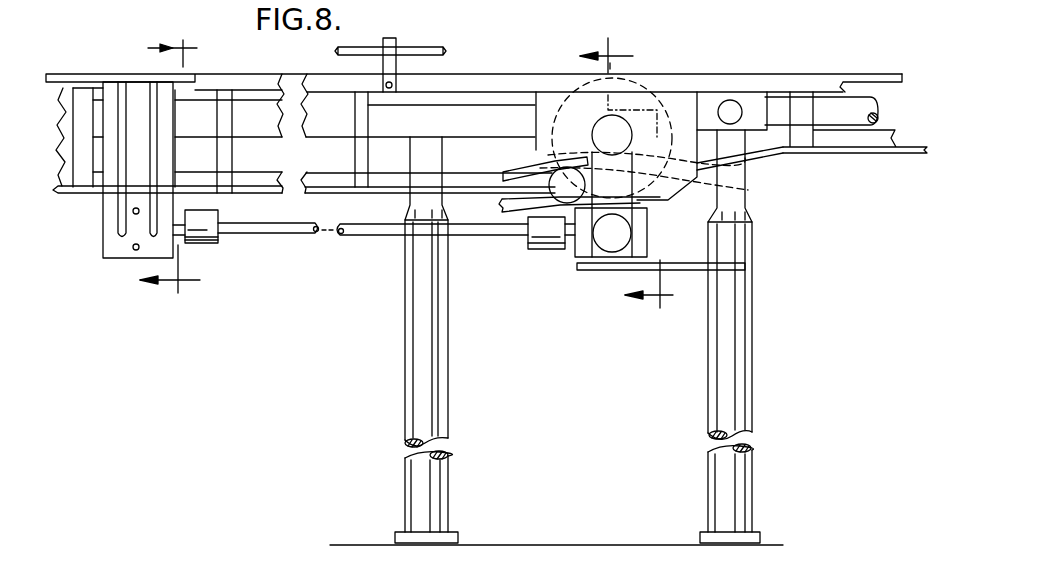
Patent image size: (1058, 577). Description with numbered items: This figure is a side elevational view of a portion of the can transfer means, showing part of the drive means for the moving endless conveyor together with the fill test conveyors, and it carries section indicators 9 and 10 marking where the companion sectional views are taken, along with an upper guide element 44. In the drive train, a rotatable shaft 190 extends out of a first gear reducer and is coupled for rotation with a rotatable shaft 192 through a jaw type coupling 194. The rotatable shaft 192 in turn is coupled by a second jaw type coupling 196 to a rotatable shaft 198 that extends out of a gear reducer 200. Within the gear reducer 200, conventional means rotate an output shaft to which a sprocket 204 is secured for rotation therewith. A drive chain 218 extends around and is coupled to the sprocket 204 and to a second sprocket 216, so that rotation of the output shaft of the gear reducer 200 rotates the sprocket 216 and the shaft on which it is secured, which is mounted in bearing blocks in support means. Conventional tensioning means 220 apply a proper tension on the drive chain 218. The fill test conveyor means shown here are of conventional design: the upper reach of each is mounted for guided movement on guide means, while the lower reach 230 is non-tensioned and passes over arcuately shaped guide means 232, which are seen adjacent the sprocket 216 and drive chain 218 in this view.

The section line 9- 9 is at (636, 173).
The section line 10- 10 is at (187, 166).
The guide post 44 is at (405, 52).
The rotatable shaft 190 is at (175, 225).
The rotatable shaft 192 is at (307, 240).
The jaw type coupling 194 is at (220, 243).
The jaw type coupling 196 is at (542, 250).
The rotatable shaft 198 is at (567, 250).
The gear reducer 200 is at (637, 250).
The sprocket 204 is at (625, 240).
The sprocket 216 is at (625, 137).
The drive chain 218 is at (650, 203).
The tensioning means 220 is at (503, 178).
The lower reach 230 is at (773, 157).
The arcuately shaped guide means 232 is at (740, 188).